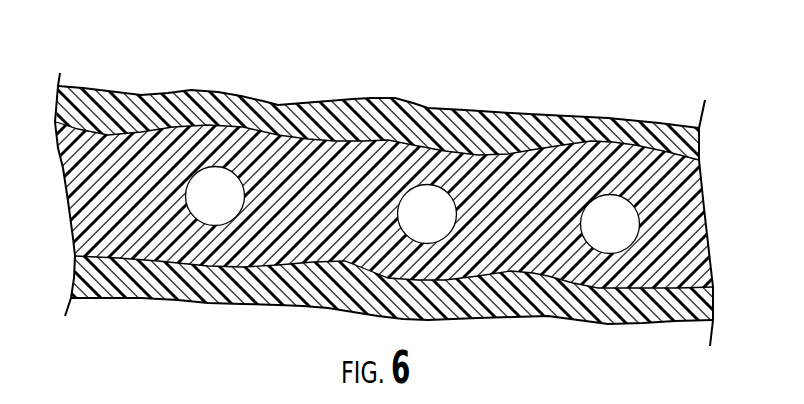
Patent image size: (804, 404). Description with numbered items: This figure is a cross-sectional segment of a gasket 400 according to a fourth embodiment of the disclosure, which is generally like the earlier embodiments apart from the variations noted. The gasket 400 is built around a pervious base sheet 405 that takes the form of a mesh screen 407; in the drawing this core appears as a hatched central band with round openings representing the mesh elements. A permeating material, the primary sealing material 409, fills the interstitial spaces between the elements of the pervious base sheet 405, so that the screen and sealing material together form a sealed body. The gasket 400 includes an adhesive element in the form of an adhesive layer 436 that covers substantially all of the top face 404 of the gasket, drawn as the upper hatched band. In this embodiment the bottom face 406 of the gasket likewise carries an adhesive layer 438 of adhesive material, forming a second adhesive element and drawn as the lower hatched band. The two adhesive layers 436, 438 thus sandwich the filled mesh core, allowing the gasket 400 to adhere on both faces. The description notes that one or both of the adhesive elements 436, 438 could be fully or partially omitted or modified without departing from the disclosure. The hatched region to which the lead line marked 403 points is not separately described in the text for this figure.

The gasket 400 is at (581, 96).
The core layer 403 is at (690, 205).
The top face 404 is at (195, 72).
The pervious base sheet 405 is at (242, 228).
The bottom face 406 is at (274, 303).
The mesh screen 407 is at (600, 233).
The primary sealing material 409 is at (644, 147).
The adhesive layer 436 is at (377, 106).
The adhesive layer 438 is at (564, 303).